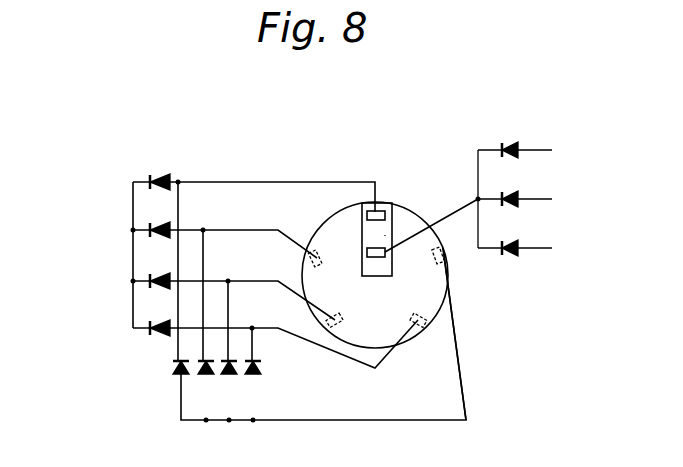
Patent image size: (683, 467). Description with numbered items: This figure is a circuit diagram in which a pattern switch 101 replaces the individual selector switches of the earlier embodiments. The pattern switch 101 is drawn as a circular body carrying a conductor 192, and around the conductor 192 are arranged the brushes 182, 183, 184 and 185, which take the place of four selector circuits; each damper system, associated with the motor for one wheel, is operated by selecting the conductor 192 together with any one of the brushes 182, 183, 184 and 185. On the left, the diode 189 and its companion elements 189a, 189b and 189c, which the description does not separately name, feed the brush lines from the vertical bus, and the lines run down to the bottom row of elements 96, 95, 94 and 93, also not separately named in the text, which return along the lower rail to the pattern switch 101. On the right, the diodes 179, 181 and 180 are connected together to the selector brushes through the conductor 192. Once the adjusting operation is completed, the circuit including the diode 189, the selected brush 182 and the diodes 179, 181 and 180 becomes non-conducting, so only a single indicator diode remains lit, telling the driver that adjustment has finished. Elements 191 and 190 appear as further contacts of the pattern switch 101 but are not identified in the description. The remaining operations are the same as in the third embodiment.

The diode 189 is at (148, 180).
The diode 189a is at (148, 229).
The diode 189b is at (148, 327).
The diode 189c is at (148, 280).
The diode 96 is at (178, 371).
The diode 95 is at (200, 378).
The diode 94 is at (234, 378).
The diode 93 is at (256, 371).
The diode 179 is at (518, 146).
The diode 181 is at (518, 195).
The diode 180 is at (518, 244).
The brush 182 is at (380, 210).
The contact 191 is at (367, 249).
The conductor 192 is at (386, 234).
The brush 183 is at (313, 249).
The brush 184 is at (349, 304).
The brush 185 is at (414, 316).
The brush contact 190 is at (446, 255).
The pattern switch 101 is at (432, 272).